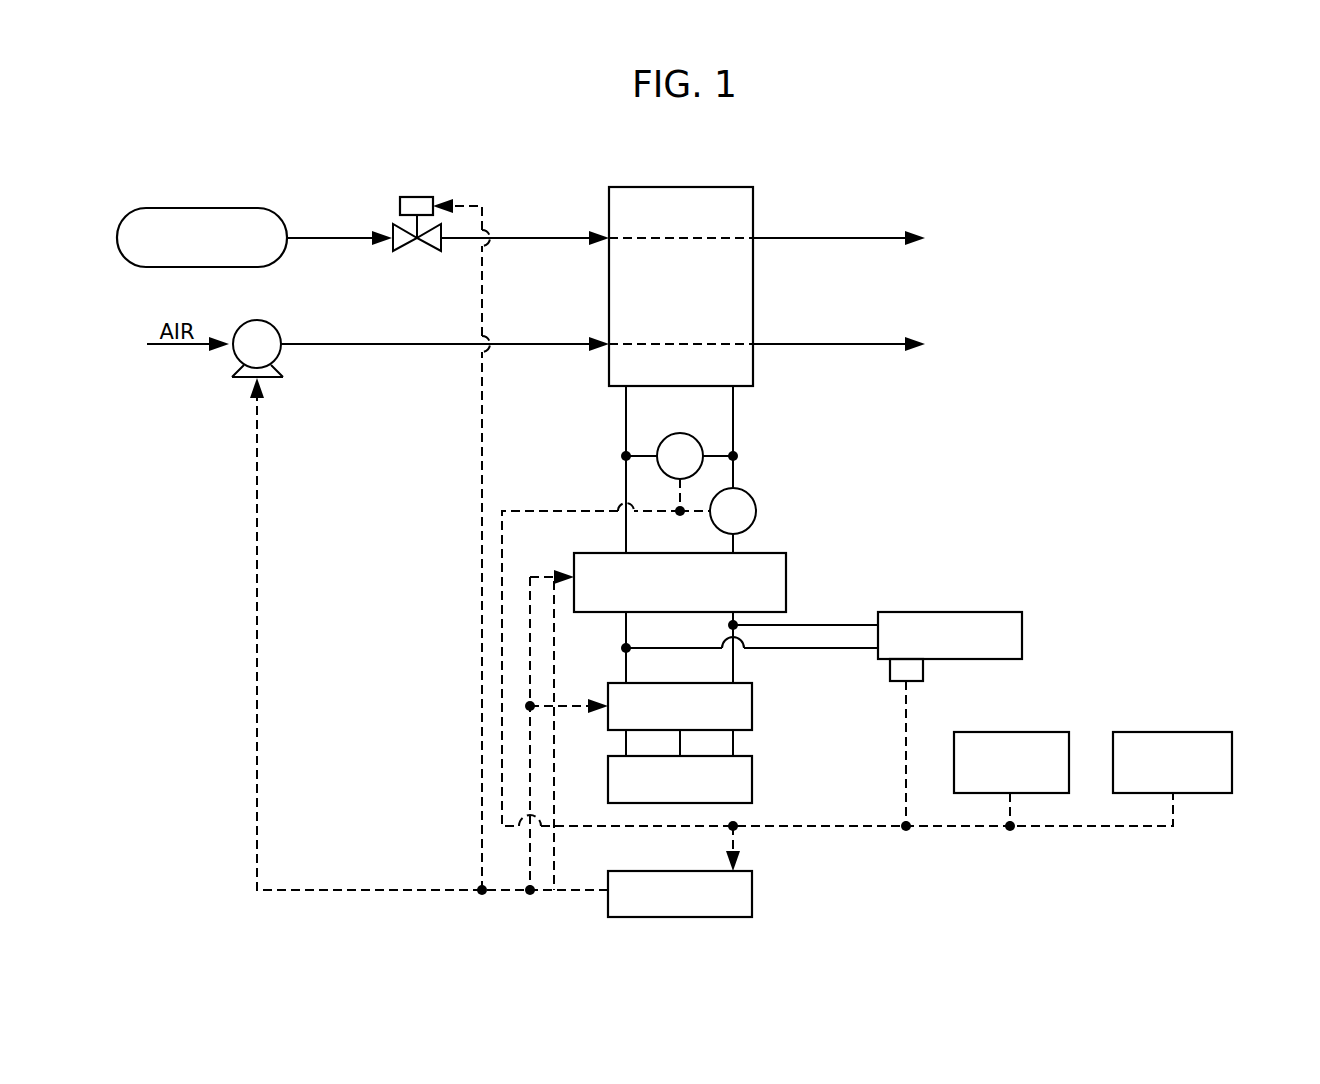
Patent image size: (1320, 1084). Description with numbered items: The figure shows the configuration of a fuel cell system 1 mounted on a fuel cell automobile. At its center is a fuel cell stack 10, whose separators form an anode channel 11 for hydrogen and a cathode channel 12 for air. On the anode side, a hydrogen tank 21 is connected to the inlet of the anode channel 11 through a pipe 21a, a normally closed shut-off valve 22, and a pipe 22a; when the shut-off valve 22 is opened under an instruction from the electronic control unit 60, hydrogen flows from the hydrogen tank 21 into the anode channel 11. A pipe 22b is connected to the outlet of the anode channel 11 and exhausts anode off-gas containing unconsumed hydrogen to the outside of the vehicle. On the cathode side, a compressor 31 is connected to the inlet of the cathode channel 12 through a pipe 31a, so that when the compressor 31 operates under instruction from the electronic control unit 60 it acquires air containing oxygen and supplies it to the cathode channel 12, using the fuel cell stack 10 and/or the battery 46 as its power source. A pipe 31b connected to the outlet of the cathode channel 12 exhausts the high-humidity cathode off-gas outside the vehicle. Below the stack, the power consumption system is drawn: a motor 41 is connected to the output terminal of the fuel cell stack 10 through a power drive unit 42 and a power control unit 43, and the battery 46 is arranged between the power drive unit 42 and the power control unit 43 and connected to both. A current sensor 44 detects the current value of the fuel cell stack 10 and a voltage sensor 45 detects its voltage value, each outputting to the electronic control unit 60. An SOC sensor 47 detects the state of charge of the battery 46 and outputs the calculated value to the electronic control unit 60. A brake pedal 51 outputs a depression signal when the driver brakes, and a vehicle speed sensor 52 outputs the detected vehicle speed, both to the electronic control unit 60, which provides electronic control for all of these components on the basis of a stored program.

The fuel cell system 1 is at (975, 158).
The fuel cell stack 10 is at (700, 176).
The anode channel 11 is at (667, 240).
The cathode channel 12 is at (700, 341).
The hydrogen tank 21 is at (230, 213).
The pipe 21a is at (310, 237).
The shut-off valve 22 is at (422, 196).
The pipe 22a is at (518, 237).
The pipe 22b is at (786, 237).
The compressor 31 is at (276, 325).
The pipe 31a is at (402, 342).
The pipe 31b is at (786, 342).
The motor 41 is at (756, 774).
The power drive unit 42 is at (756, 700).
The power control unit 43 is at (786, 574).
The current sensor 44 is at (757, 509).
The voltage sensor 45 is at (678, 434).
The battery 46 is at (1022, 632).
The SOC sensor 47 is at (923, 672).
The brake pedal 51 is at (1040, 732).
The vehicle speed sensor 52 is at (1196, 732).
The electronic control unit 60 is at (753, 886).